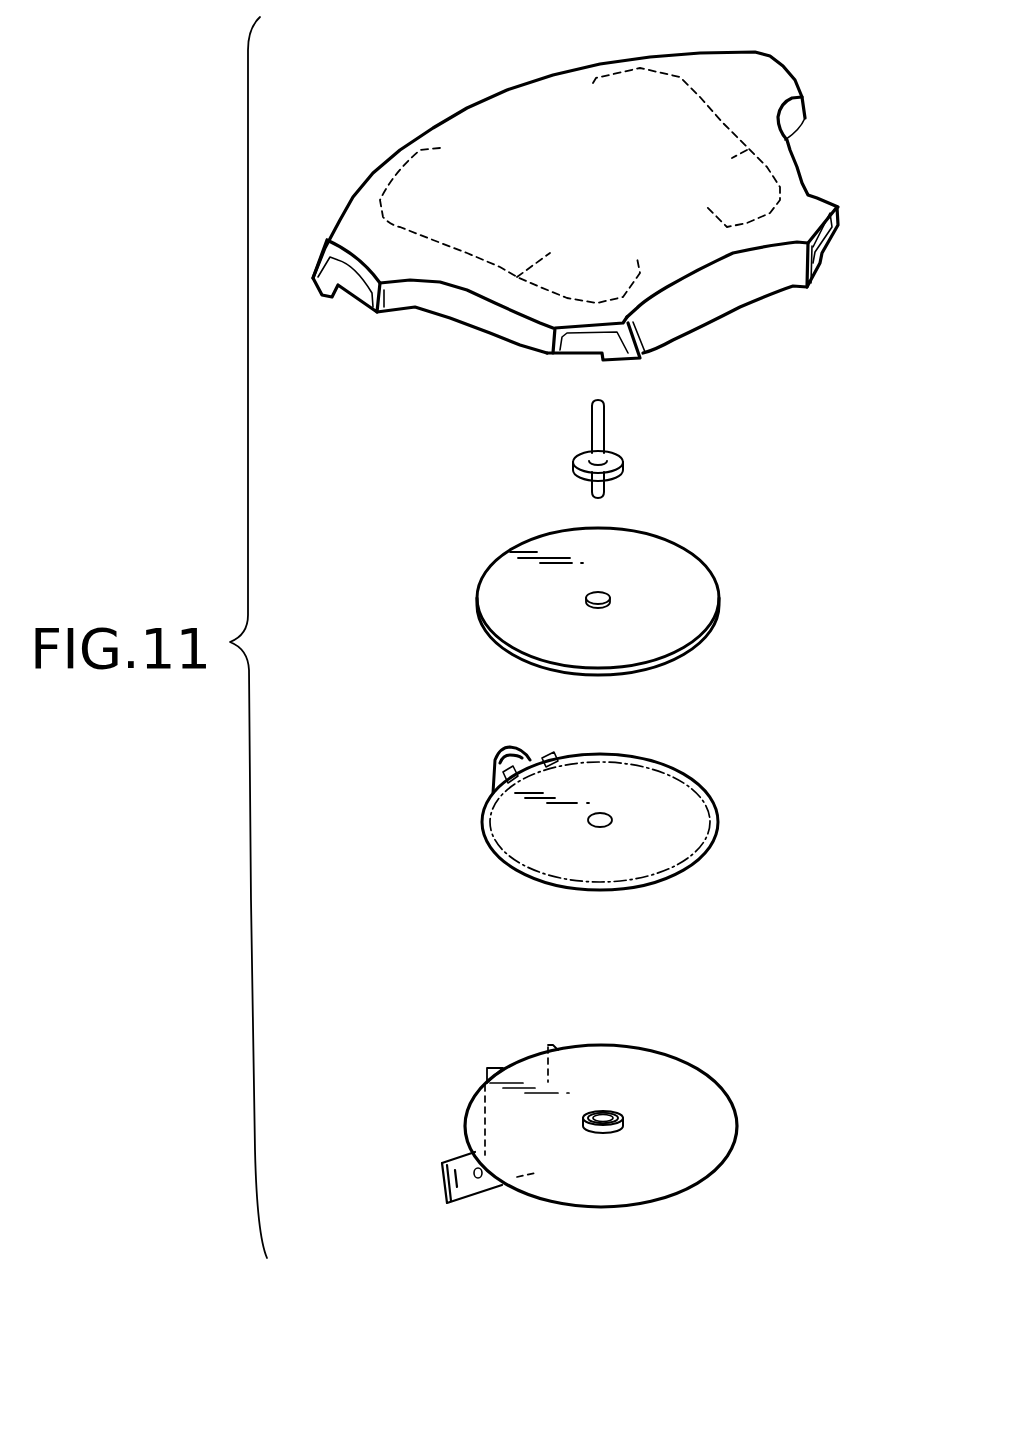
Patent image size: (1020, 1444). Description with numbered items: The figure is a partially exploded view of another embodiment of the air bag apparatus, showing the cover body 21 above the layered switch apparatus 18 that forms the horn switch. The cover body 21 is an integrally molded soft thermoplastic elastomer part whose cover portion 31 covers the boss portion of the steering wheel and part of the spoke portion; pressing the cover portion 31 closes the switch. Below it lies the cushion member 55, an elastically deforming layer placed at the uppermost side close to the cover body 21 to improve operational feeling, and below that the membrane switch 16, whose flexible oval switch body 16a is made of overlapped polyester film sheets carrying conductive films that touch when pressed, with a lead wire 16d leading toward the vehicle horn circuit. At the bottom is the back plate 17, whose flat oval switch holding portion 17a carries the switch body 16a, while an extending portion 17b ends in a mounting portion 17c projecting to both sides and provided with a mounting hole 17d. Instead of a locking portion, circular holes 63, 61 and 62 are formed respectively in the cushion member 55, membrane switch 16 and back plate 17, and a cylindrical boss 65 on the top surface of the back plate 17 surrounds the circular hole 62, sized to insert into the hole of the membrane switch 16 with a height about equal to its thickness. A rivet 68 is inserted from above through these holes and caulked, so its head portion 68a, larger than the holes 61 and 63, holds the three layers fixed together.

The cover body 21 is at (810, 195).
The cover portion 31 is at (510, 112).
The switch apparatus 18 is at (809, 502).
The rivet 68 is at (599, 448).
The head portion 68a is at (572, 458).
The cushion member 55 is at (643, 580).
The circular hole 63 is at (607, 592).
The membrane switch 16 is at (612, 807).
The switch body 16a is at (683, 823).
The lead wire 16d is at (493, 760).
The circular hole 61 is at (613, 817).
The back plate 17 is at (592, 1122).
The switch holding portion 17a is at (707, 1120).
The extending portion 17b is at (472, 1112).
The mounting portion 17c is at (427, 1182).
The mounting hole 17d is at (475, 1178).
The circular hole 62 is at (603, 1113).
The cylindrical boss 65 is at (642, 1062).